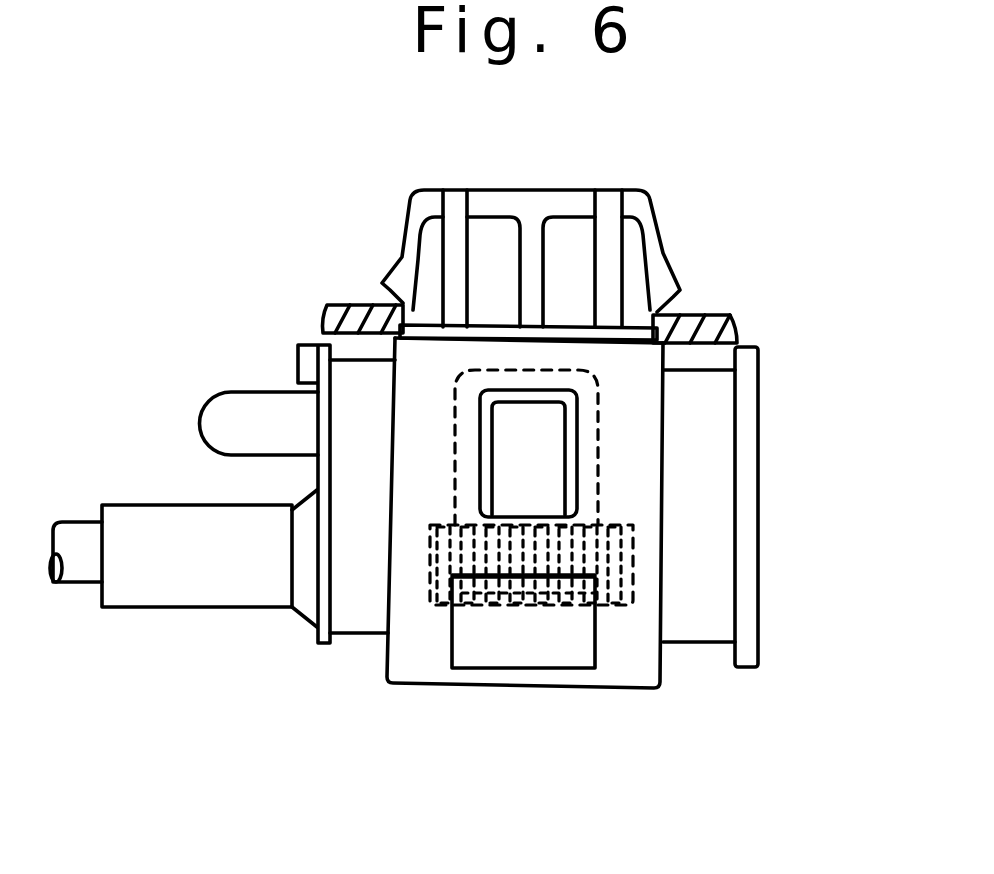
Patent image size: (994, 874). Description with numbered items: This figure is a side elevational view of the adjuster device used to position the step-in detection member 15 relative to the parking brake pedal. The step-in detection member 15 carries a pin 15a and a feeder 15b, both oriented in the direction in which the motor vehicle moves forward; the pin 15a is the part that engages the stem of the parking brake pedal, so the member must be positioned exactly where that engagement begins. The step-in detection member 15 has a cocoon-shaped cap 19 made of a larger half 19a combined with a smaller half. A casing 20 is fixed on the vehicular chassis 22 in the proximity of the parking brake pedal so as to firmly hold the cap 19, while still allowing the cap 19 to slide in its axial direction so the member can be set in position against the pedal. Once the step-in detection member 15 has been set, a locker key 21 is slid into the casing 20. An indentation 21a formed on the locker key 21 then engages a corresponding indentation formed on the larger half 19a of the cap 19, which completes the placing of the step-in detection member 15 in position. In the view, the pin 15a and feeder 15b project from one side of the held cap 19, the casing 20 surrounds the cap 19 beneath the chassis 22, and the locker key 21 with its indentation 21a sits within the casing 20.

The step-in detection member 15 is at (346, 650).
The pin 15a is at (237, 410).
The feeder 15b is at (192, 588).
The cocoon-shaped cap 19 is at (352, 470).
The larger half 19a is at (620, 573).
The casing 20 is at (638, 463).
The locker key 21 is at (513, 648).
The indentation 21a is at (473, 593).
The vehicular chassis 22 is at (700, 318).